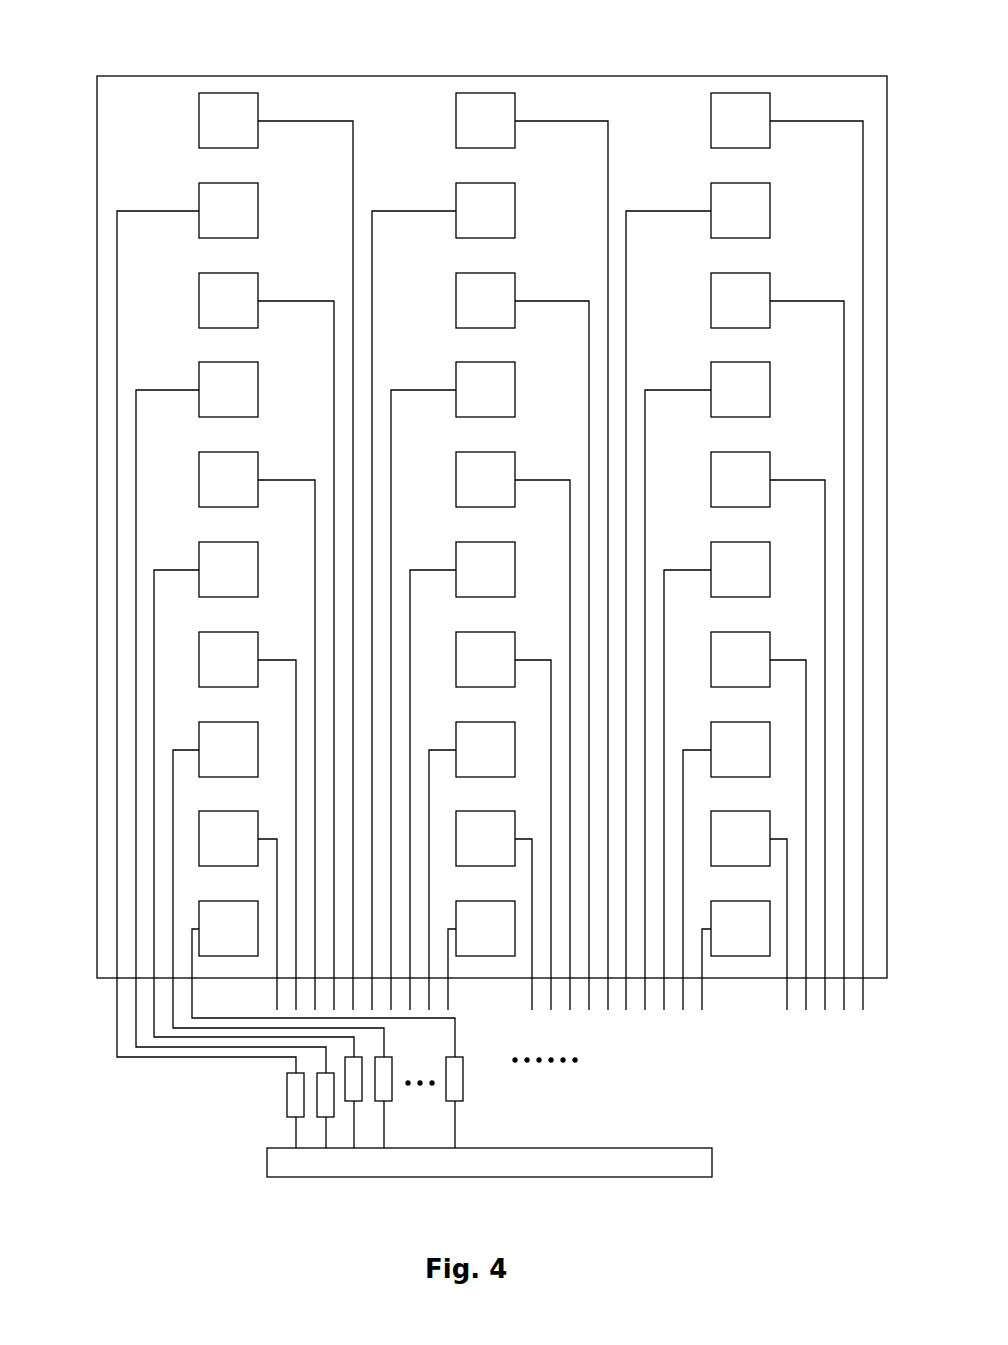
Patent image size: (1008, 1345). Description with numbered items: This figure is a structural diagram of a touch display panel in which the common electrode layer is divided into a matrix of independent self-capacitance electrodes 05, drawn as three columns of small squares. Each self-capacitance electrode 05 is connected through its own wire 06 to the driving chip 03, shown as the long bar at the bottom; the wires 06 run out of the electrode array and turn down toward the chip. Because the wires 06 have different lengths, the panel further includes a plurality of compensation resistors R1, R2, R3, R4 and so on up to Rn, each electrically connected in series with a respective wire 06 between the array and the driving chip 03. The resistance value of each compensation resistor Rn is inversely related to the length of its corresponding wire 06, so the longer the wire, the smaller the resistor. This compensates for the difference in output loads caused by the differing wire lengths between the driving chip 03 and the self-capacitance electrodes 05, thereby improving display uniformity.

The self-capacitance electrode 05 is at (228, 95).
The wire 06 is at (116, 957).
The driving chip 03 is at (467, 1165).
The compensation resistor R1 is at (277, 1110).
The compensation resistor R2 is at (316, 1110).
The compensation resistor R3 is at (354, 1102).
The compensation resistor R4 is at (382, 1102).
The compensation resistor Rn is at (468, 1102).